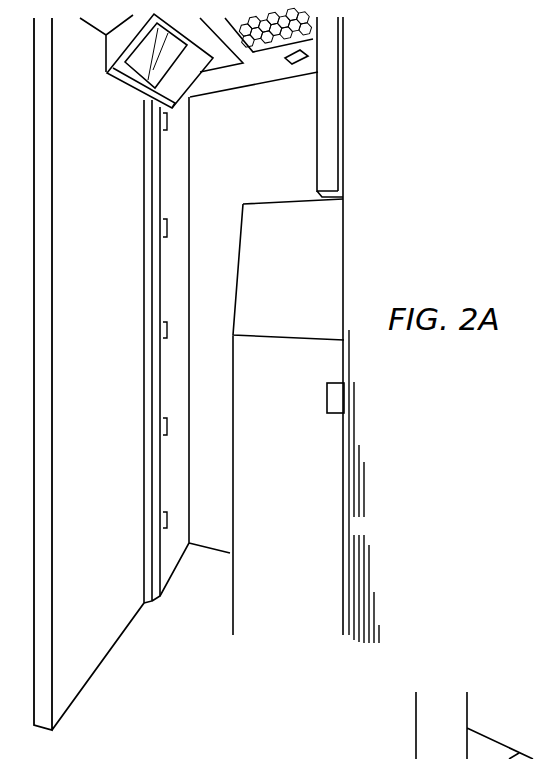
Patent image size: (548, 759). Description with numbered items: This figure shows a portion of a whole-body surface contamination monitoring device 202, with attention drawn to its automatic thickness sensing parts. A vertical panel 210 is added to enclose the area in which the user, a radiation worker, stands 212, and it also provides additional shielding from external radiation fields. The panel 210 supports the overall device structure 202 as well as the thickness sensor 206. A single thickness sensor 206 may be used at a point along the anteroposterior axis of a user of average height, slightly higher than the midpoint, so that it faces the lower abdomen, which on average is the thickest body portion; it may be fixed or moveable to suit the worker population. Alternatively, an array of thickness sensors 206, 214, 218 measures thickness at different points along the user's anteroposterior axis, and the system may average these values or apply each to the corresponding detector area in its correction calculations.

The whole-body surface contamination monitoring device 202 is at (353, 523).
The thickness sensor 206 is at (161, 163).
The vertical panel 210 is at (80, 672).
The area in which the user stands 212 is at (213, 530).
The thickness sensor 214 is at (167, 225).
The thickness sensor 218 is at (167, 425).